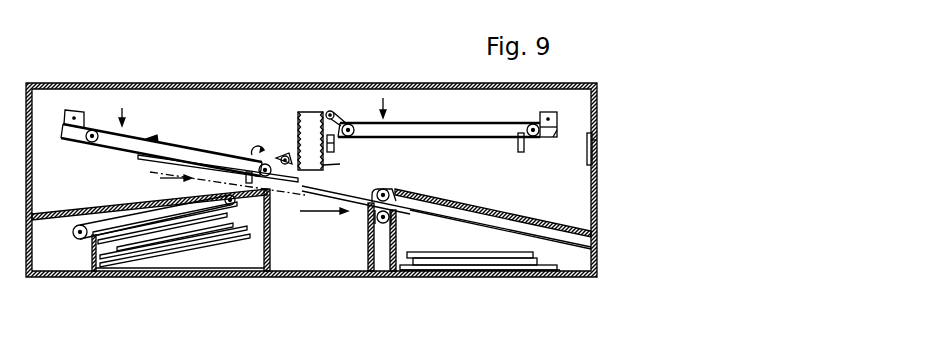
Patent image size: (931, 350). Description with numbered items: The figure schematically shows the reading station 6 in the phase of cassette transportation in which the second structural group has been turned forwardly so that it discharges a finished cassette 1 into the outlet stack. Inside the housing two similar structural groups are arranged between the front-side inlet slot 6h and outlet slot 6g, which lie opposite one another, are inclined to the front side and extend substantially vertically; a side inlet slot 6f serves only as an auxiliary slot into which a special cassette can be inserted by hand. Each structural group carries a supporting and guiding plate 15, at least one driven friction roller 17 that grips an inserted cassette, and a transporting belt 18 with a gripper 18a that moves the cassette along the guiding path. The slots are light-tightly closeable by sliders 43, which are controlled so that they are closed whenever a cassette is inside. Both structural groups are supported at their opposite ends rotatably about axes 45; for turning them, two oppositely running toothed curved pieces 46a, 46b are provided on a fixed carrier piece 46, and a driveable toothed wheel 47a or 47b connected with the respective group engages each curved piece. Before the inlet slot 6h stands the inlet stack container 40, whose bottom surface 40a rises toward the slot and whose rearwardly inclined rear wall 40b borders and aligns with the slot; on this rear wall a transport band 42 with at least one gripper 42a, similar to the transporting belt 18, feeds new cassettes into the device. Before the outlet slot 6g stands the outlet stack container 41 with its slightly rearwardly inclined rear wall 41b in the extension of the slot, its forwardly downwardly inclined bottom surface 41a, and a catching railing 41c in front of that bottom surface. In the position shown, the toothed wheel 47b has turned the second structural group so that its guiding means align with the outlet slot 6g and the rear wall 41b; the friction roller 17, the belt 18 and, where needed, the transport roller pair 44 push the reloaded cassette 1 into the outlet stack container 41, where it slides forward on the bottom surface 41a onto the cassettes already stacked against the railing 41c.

The cassette 1 is at (328, 193).
The reading station 6 is at (397, 84).
The inlet slot 6f is at (597, 142).
The outlet slot 6g is at (388, 186).
The inlet slot 6h is at (268, 203).
The supporting and guiding plate 15 is at (225, 160).
The driven friction roller 17 is at (247, 176).
The transporting belt 18 is at (191, 141).
The gripper 18a is at (557, 134).
The stack container 40 is at (151, 244).
The bottom surface 40a is at (180, 258).
The rear wall 40b is at (138, 227).
The stack container 41 is at (519, 246).
The bottom surface 41a is at (600, 247).
The rear wall 41b is at (575, 228).
The catching railing 41c is at (532, 277).
The transport band 42 is at (73, 232).
The gripper 42a is at (70, 234).
The slider 43 is at (367, 216).
The transport roller pair 44 is at (380, 235).
The axis 45 is at (77, 110).
The fixed carrier piece 46 is at (329, 115).
The toothed curved piece 46a is at (340, 164).
The toothed curved piece 46b is at (302, 113).
The toothed wheel 47a is at (333, 112).
The toothed wheel 47b is at (285, 156).